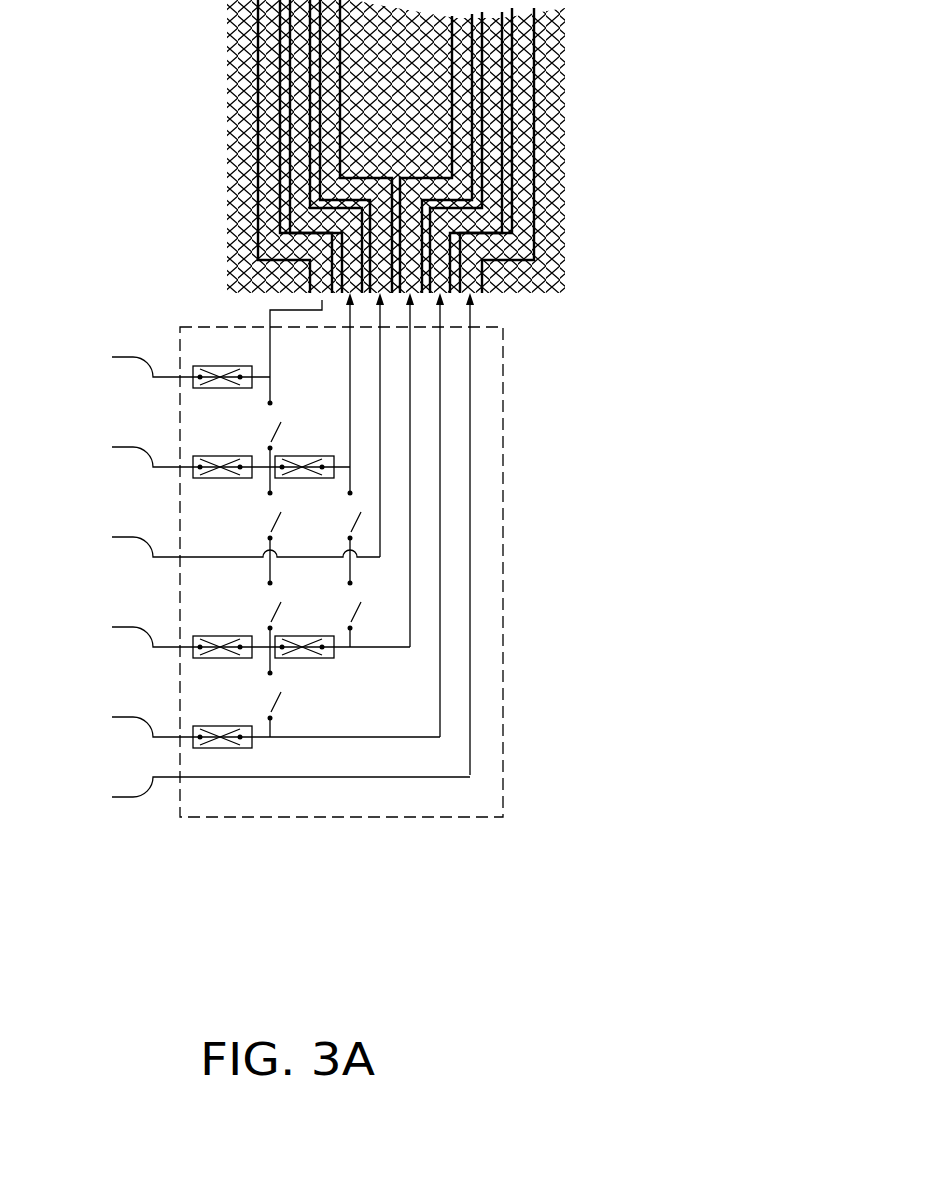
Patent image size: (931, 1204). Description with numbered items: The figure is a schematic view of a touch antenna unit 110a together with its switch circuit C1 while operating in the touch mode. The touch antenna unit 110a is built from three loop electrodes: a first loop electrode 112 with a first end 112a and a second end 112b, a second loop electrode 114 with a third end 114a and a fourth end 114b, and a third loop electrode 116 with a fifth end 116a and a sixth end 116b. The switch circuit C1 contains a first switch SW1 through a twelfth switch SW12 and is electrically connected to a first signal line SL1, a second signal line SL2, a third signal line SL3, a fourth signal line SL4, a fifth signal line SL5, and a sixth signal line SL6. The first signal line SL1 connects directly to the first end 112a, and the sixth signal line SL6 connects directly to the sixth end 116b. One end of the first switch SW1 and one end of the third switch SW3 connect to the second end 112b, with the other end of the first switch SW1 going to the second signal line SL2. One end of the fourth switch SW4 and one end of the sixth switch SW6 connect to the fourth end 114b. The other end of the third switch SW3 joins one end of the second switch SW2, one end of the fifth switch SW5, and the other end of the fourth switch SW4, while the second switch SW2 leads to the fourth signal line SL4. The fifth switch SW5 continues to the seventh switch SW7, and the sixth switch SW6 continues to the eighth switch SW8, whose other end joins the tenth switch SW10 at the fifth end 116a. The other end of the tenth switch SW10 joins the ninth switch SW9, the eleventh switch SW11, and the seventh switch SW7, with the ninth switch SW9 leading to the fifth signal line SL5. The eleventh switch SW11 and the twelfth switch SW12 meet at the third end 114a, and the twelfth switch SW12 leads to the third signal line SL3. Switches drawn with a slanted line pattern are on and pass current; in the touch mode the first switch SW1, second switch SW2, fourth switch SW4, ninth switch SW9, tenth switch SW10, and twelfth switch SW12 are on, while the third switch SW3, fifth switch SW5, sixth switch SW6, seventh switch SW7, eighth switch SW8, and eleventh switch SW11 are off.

The touch antenna unit 110a is at (148, 62).
The first loop electrode 112 is at (273, 62).
The second loop electrode 114 is at (297, 120).
The third loop electrode 116 is at (325, 160).
The first end 112a is at (473, 295).
The second end 112b is at (321, 294).
The third end 114a is at (442, 294).
The fourth end 114b is at (352, 294).
The fifth end 116a is at (412, 294).
The sixth end 116b is at (382, 294).
The switch circuit C1 is at (317, 820).
The first switch SW1 is at (222, 364).
The second switch SW2 is at (222, 451).
The third switch SW3 is at (291, 419).
The fourth switch SW4 is at (304, 451).
The fifth switch SW5 is at (295, 516).
The sixth switch SW6 is at (371, 514).
The seventh switch SW7 is at (292, 601).
The eighth switch SW8 is at (370, 604).
The ninth switch SW9 is at (222, 629).
The tenth switch SW10 is at (304, 634).
The eleventh switch SW11 is at (299, 696).
The twelfth switch SW12 is at (222, 720).
The first signal line SL1 is at (270, 794).
The second signal line SL2 is at (170, 359).
The third signal line SL3 is at (255, 719).
The fourth signal line SL4 is at (210, 449).
The fifth signal line SL5 is at (240, 629).
The sixth signal line SL6 is at (225, 539).